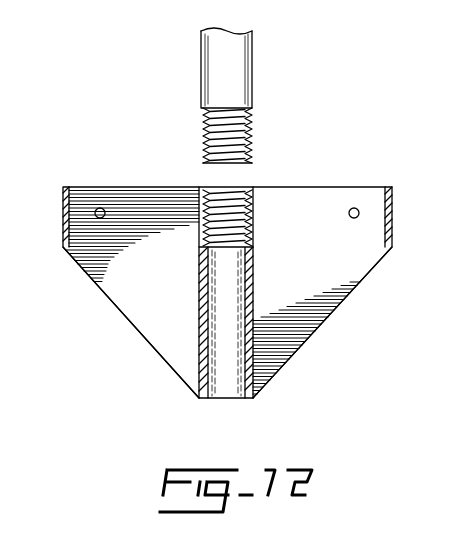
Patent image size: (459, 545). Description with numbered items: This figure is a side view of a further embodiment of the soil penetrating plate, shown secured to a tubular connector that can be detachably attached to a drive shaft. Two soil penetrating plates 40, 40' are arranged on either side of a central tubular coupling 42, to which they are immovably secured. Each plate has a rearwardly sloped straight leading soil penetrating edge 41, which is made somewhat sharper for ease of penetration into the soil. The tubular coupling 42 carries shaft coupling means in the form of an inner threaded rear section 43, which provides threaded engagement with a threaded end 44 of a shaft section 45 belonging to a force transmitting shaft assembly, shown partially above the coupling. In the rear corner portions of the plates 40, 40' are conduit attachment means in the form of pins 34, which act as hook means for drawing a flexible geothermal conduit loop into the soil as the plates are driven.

The pins 34 is at (98, 208).
The soil penetrating plate 40 is at (121, 272).
The soil penetrating plate 40' is at (322, 290).
The leading soil penetrating edge 41 is at (140, 337).
The tubular coupling 42 is at (227, 277).
The inner threaded rear section 43 is at (212, 204).
The threaded end 44 is at (250, 127).
The shaft section 45 is at (238, 60).